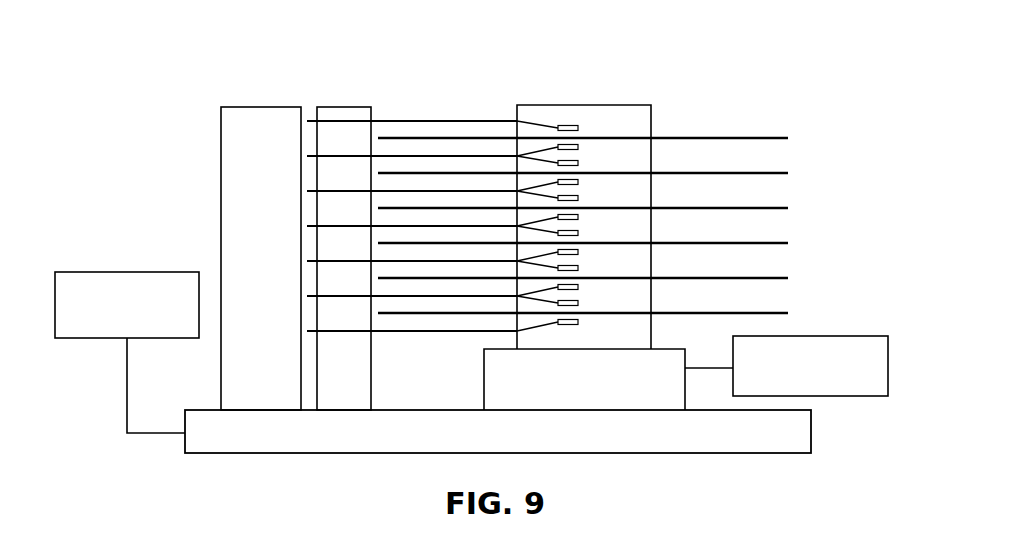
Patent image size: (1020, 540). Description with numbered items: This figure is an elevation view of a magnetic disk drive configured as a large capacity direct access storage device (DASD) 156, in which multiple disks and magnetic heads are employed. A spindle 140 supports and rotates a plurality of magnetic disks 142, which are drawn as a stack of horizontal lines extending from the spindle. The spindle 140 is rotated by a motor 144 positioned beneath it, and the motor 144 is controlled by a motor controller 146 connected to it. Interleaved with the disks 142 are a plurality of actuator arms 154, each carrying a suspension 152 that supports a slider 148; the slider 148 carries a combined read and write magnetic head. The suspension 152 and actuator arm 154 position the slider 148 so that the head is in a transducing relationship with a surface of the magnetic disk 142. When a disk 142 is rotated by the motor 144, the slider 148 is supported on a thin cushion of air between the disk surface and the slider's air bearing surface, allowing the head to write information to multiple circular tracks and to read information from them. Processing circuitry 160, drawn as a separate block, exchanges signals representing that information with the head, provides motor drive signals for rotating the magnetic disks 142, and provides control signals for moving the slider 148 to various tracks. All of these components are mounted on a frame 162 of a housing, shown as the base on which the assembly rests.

The spindle 140 is at (640, 105).
The magnetic disk 142 is at (789, 139).
The motor 144 is at (615, 391).
The motor controller 146 is at (846, 397).
The slider 148 is at (592, 137).
The suspension 152 is at (547, 157).
The actuator arm 154 is at (484, 156).
The direct access storage device (DASD) 156 is at (700, 106).
The processing circuitry 160 is at (97, 272).
The frame 162 is at (238, 454).